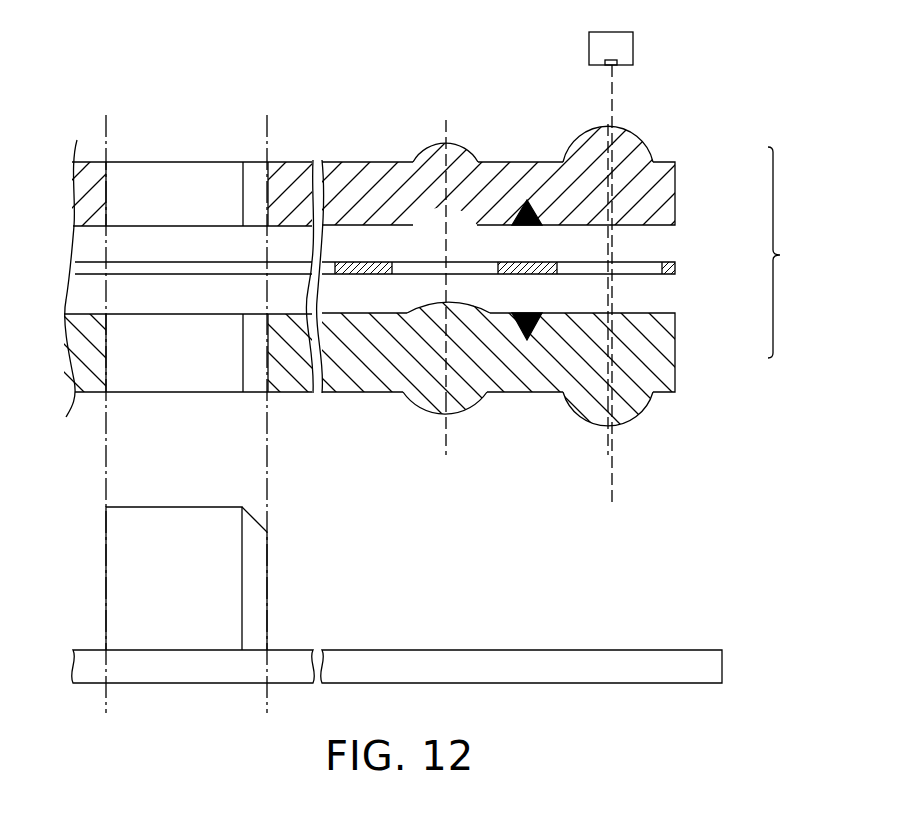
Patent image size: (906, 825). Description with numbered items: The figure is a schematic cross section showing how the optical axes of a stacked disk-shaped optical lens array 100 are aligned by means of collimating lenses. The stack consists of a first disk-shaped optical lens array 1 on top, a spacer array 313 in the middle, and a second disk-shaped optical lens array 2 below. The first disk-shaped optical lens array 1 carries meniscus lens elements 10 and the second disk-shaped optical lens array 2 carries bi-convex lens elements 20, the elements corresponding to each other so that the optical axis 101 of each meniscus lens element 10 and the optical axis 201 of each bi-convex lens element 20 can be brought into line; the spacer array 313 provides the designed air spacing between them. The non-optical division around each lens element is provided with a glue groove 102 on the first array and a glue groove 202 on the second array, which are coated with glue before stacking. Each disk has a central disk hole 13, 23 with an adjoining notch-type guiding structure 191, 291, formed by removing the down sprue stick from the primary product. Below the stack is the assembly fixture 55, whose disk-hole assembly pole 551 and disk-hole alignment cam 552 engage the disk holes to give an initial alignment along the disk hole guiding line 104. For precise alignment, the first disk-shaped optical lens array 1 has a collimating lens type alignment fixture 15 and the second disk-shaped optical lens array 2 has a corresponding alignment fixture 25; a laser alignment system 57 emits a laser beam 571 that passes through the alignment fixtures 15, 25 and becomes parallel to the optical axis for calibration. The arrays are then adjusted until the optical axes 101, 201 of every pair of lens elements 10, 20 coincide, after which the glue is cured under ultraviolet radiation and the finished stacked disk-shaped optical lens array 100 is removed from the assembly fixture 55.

The first disk-shaped optical lens array 1 is at (661, 178).
The second disk-shaped optical lens array 2 is at (660, 346).
The meniscus lens element 10 is at (460, 148).
The alignment fixture 15 is at (652, 156).
The disk hole 13 is at (167, 178).
The guiding structure 191 is at (257, 170).
The optical axis 101 is at (607, 122).
The glue groove 102 is at (528, 227).
The disk hole guiding line 104 is at (189, 416).
The stacked disk-shaped optical lens array 100 is at (796, 252).
The spacer array 313 is at (676, 268).
The bi-convex lens element 20 is at (415, 405).
The alignment fixture 25 is at (650, 418).
The optical axis 201 is at (610, 445).
The glue groove 202 is at (527, 313).
The disk hole 23 is at (170, 372).
The guiding structure 291 is at (256, 385).
The laser alignment system 57 is at (633, 47).
The laser beam 571 is at (620, 92).
The assembly fixture 55 is at (722, 658).
The disk-hole assembly pole 551 is at (118, 576).
The disk-hole alignment cam 552 is at (254, 580).